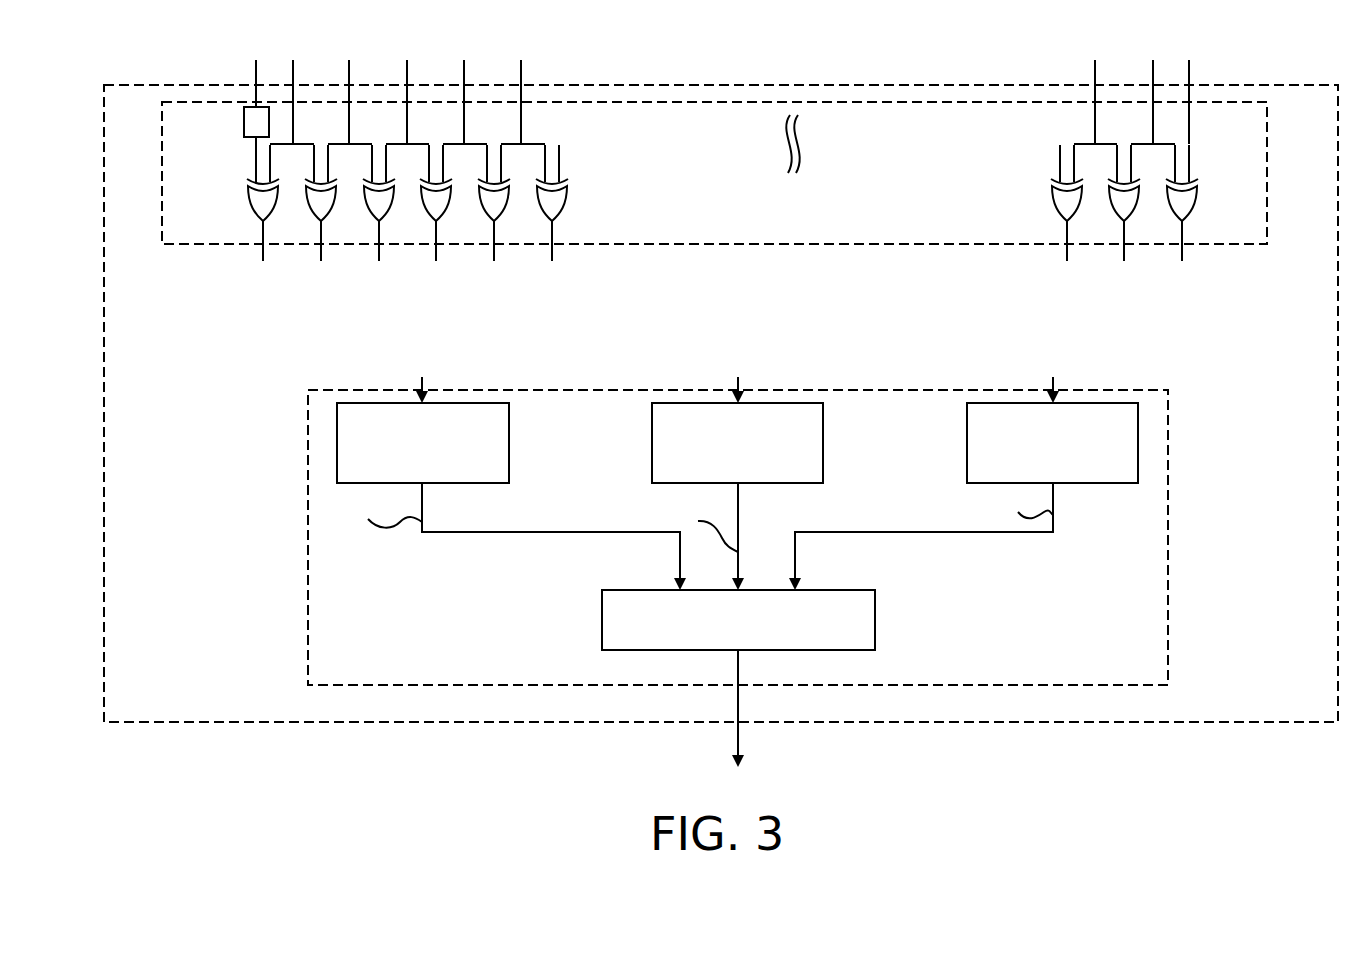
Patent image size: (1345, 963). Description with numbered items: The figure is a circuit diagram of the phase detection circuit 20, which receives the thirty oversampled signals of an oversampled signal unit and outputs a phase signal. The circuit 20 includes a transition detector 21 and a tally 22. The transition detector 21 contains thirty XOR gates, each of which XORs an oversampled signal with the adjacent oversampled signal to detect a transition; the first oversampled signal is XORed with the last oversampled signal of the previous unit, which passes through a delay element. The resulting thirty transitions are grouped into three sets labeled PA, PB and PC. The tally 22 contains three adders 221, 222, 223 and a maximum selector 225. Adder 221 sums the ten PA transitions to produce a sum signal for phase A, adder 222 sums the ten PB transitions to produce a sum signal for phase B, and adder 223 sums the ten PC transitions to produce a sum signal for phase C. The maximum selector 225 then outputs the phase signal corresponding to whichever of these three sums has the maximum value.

The phase detection circuit 20 is at (722, 83).
The transition detector 21 is at (1272, 122).
The tally 22 is at (1174, 423).
The adder 221 is at (449, 443).
The adder 222 is at (764, 443).
The adder 223 is at (1024, 443).
The maximum selector 225 is at (875, 617).